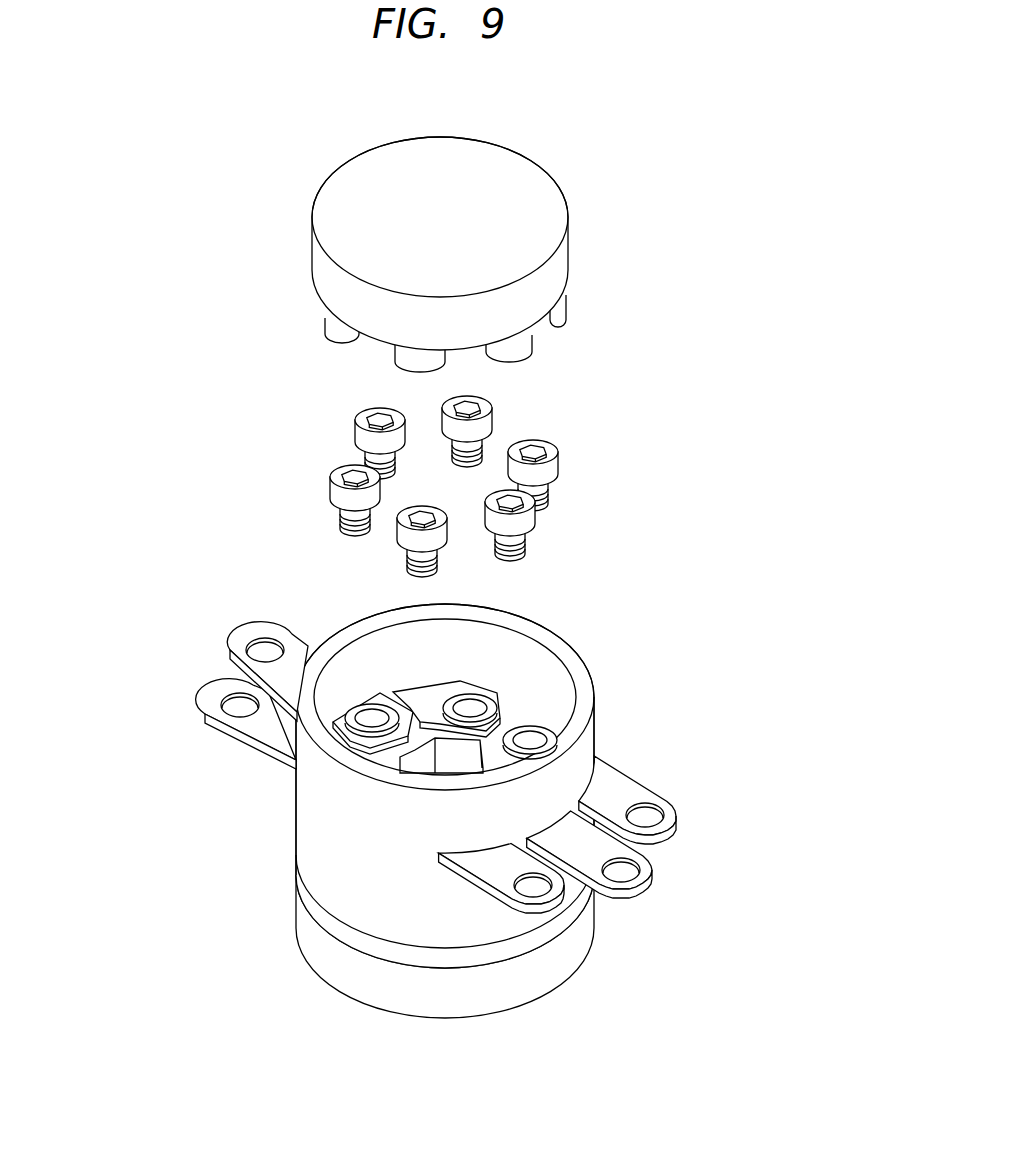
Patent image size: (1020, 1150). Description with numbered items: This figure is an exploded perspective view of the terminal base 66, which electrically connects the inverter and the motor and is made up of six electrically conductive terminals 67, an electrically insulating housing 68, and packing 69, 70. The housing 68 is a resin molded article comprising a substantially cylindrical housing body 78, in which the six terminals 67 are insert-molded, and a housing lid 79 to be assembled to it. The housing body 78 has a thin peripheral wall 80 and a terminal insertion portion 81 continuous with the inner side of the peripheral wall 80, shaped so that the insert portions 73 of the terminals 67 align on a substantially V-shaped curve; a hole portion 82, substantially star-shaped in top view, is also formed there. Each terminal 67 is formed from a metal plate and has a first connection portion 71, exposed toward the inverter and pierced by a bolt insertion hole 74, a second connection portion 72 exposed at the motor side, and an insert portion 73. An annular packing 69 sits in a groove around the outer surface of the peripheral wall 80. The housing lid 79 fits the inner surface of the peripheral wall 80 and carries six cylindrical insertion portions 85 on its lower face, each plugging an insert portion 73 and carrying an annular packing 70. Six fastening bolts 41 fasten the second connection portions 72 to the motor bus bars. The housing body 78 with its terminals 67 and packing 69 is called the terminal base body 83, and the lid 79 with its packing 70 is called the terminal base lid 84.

The terminal base 66 is at (738, 336).
The housing 68 is at (118, 922).
The housing body 78 is at (312, 845).
The housing lid 79 is at (346, 187).
The terminal base lid 84 is at (494, 183).
The cylindrical insertion portion 85 is at (328, 333).
The packing 70 is at (535, 340).
The fastening bolt 41 is at (547, 430).
The peripheral wall 80 is at (503, 607).
The terminal base body 83 is at (600, 679).
The terminal insertion portion 81 is at (422, 722).
The hole portion 82 is at (420, 760).
The insert portion 73 is at (527, 747).
The terminal 67 is at (257, 753).
The first connection portion 71 is at (617, 777).
The bolt insertion hole 74 is at (648, 820).
The second connection portion 72 is at (567, 967).
The packing 69 is at (353, 942).